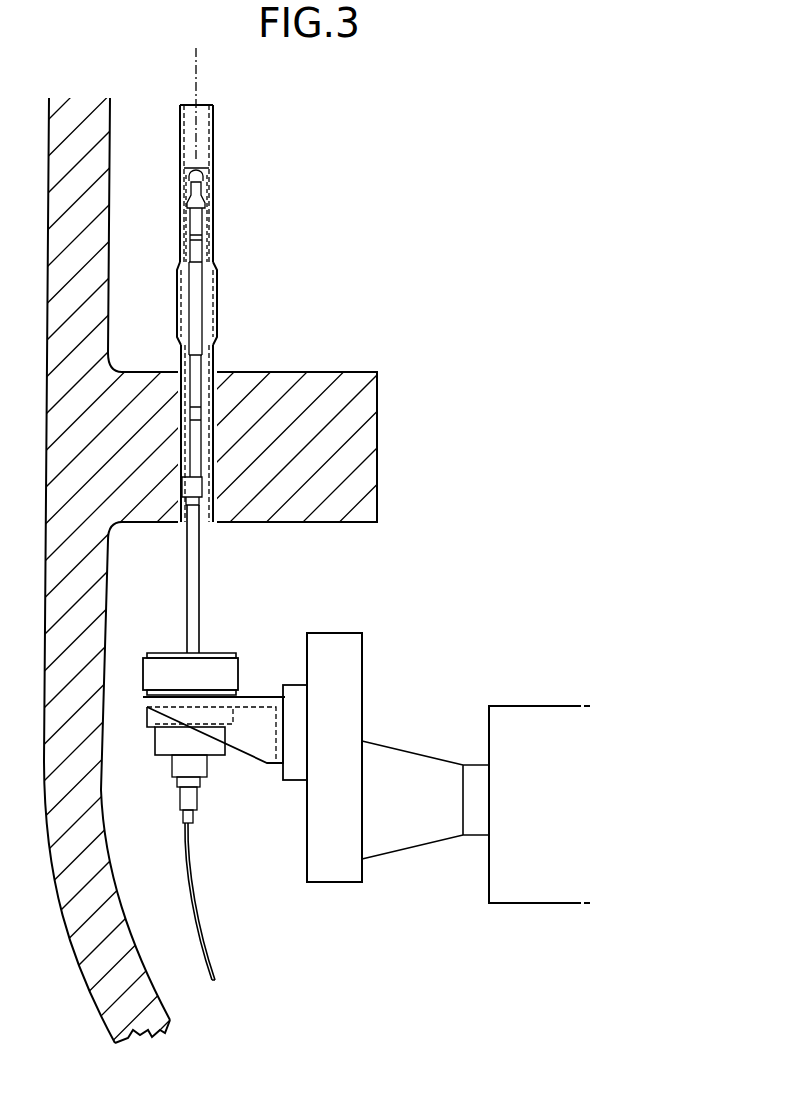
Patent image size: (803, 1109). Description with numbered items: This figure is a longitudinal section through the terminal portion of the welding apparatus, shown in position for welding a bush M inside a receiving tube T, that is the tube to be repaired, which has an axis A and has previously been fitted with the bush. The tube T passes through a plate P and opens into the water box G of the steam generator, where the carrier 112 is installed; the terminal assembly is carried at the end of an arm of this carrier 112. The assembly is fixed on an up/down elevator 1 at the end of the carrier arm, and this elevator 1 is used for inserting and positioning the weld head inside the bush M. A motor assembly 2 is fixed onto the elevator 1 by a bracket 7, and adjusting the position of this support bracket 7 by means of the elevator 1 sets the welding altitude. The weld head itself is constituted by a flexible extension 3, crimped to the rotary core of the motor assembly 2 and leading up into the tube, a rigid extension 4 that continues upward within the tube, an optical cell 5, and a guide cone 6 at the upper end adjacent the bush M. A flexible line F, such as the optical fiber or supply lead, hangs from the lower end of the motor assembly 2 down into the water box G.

The axis A is at (196, 85).
The tube to be repaired T is at (213, 137).
The bush M is at (200, 172).
The guide cone 6 is at (208, 227).
The optical cell 5 is at (203, 305).
The plate P is at (305, 398).
The rigid extension 4 is at (187, 433).
The flexible extension 3 is at (200, 595).
The motor assembly 2 is at (218, 667).
The bracket 7 is at (263, 737).
The up/down elevator 1 is at (363, 660).
The carrier 112 is at (523, 703).
The water box G is at (93, 870).
The cable F is at (200, 913).